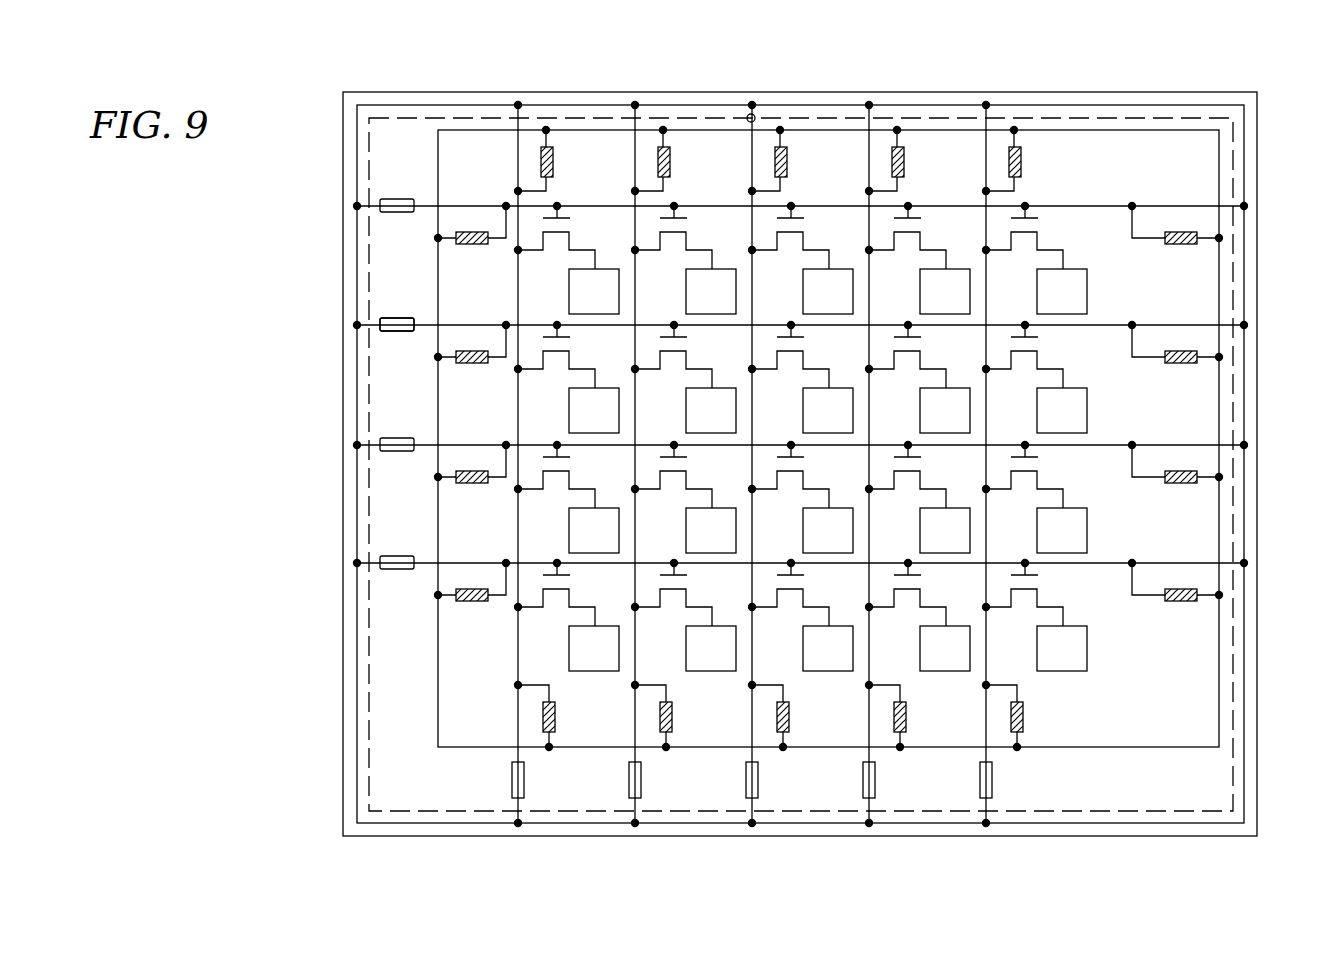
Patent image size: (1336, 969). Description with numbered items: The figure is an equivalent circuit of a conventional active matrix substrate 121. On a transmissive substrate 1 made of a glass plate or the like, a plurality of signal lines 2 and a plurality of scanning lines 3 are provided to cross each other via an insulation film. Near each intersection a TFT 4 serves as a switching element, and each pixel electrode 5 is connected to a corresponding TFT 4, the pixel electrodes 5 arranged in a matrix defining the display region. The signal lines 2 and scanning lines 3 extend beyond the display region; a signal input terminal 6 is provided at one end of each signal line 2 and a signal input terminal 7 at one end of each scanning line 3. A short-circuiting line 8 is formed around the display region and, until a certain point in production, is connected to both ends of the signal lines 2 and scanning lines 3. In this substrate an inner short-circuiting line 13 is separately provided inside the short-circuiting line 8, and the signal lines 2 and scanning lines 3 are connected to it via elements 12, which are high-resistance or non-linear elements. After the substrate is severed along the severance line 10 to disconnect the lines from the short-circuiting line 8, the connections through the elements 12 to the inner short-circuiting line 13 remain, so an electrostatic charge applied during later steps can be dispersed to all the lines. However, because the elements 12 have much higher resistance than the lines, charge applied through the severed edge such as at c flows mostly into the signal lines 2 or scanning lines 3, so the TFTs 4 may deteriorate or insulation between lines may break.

The transmissive substrate 1 is at (1257, 196).
The signal lines 2 is at (990, 147).
The scanning lines 3 is at (1097, 206).
The TFT 4 is at (1040, 222).
The pixel electrode 5 is at (1086, 293).
The signal input terminal 6 is at (512, 780).
The signal input terminal 7 is at (384, 318).
The short-circuiting line 8 is at (1244, 390).
The severance line 10 is at (893, 118).
The element 12 is at (468, 580).
The inner short-circuiting line 13 is at (1160, 130).
The active matrix substrate 121 is at (704, 440).
The severed edge c is at (754, 115).